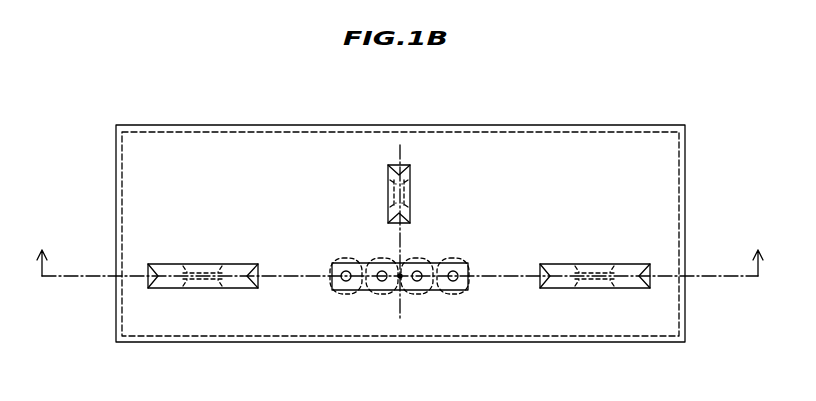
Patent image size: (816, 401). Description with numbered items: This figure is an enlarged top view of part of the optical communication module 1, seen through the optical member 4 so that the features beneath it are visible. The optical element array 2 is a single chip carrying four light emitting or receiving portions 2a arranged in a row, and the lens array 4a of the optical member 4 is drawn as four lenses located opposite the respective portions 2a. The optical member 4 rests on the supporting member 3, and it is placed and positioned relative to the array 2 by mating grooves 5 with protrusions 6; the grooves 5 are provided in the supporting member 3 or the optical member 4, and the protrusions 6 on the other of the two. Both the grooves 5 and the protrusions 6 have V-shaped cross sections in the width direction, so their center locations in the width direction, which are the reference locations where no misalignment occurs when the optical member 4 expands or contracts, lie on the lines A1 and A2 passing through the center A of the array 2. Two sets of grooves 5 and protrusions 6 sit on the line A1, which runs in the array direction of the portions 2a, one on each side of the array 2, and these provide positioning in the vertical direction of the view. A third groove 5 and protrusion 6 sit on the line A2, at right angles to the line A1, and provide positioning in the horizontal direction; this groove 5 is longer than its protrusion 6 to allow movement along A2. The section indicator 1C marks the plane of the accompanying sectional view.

The optical communication module 1 is at (737, 125).
The section line for FIG. 1C is at (403, 247).
The optical element array 2 is at (332, 290).
The light emitting or receiving portions 2a is at (350, 282).
The supporting member 3 is at (116, 125).
The optical member 4 is at (122, 150).
The lens array 4a is at (455, 293).
The grooves 5 is at (148, 264).
The protrusions 6 is at (185, 288).
The center of the optical element array A is at (403, 282).
The line A1 is at (540, 280).
The line A2 is at (400, 263).